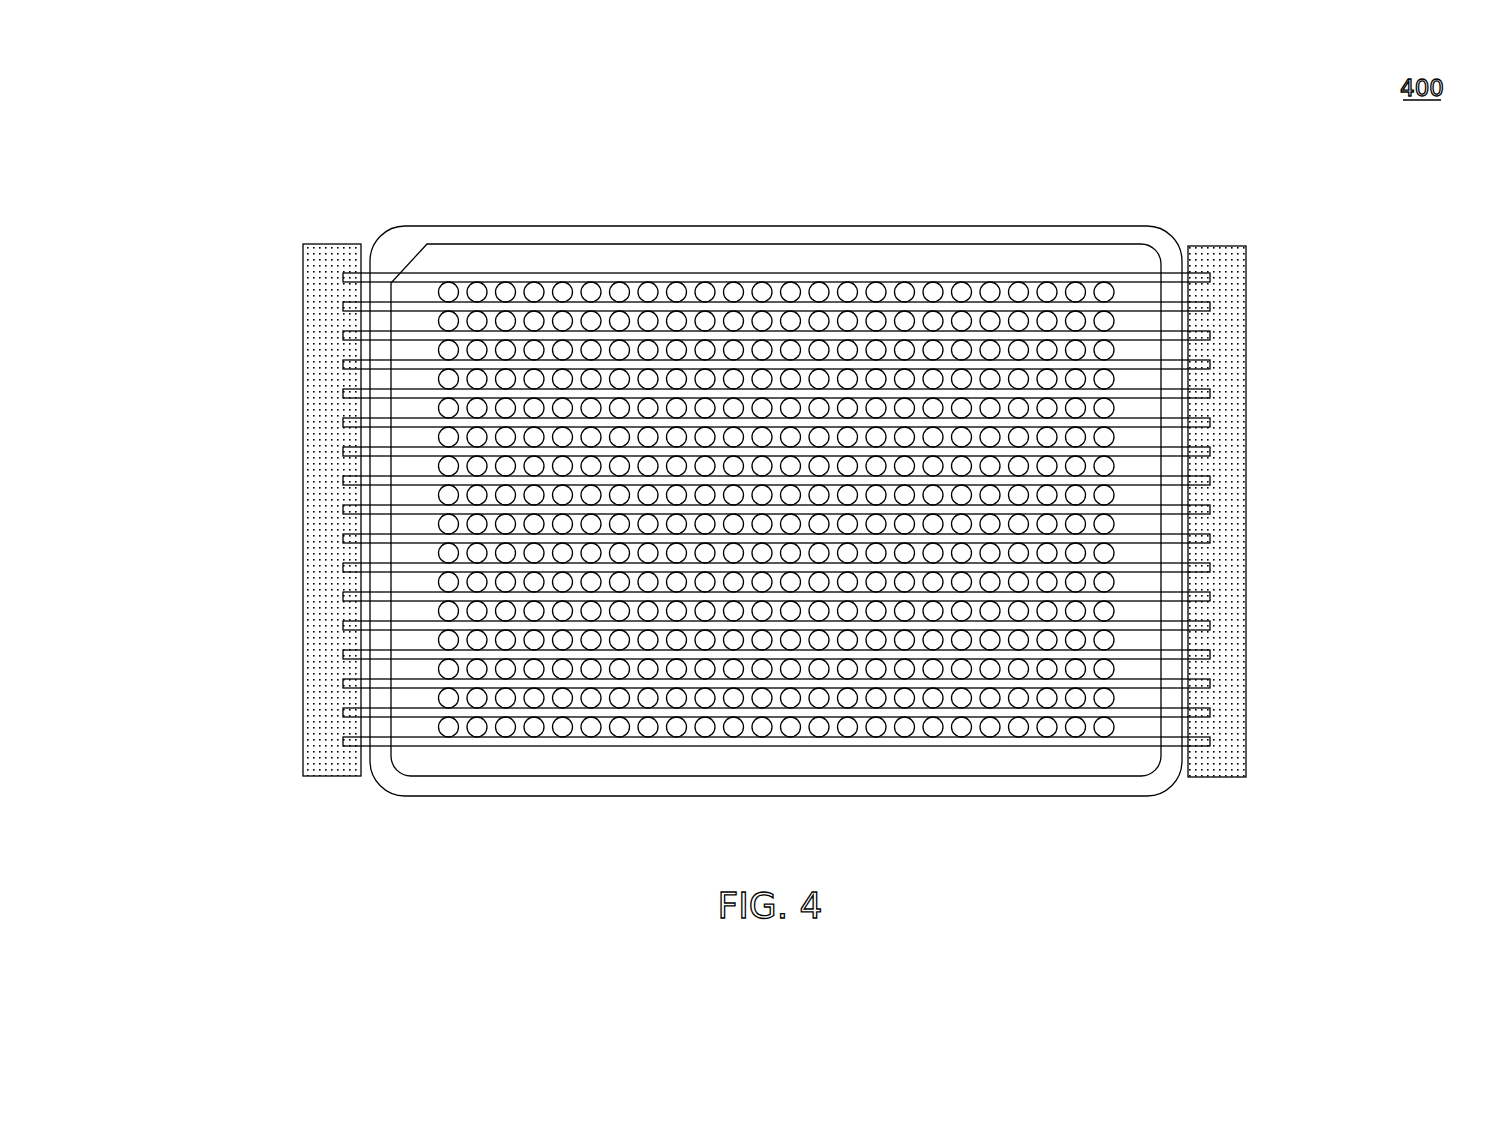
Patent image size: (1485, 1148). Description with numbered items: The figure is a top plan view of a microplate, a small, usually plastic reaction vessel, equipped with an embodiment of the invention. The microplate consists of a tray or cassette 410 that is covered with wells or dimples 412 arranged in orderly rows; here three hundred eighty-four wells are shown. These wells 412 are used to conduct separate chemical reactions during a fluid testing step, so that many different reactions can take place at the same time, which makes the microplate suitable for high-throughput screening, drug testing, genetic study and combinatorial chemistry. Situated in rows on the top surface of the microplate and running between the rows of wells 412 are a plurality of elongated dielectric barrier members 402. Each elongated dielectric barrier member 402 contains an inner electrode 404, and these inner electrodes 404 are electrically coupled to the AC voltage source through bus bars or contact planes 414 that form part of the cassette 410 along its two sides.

The elongated dielectric barrier members 402 is at (427, 273).
The inner electrodes 404 is at (343, 362).
The cassette 410 is at (1166, 232).
The wells 412 is at (855, 313).
The bus bars 414 is at (320, 548).